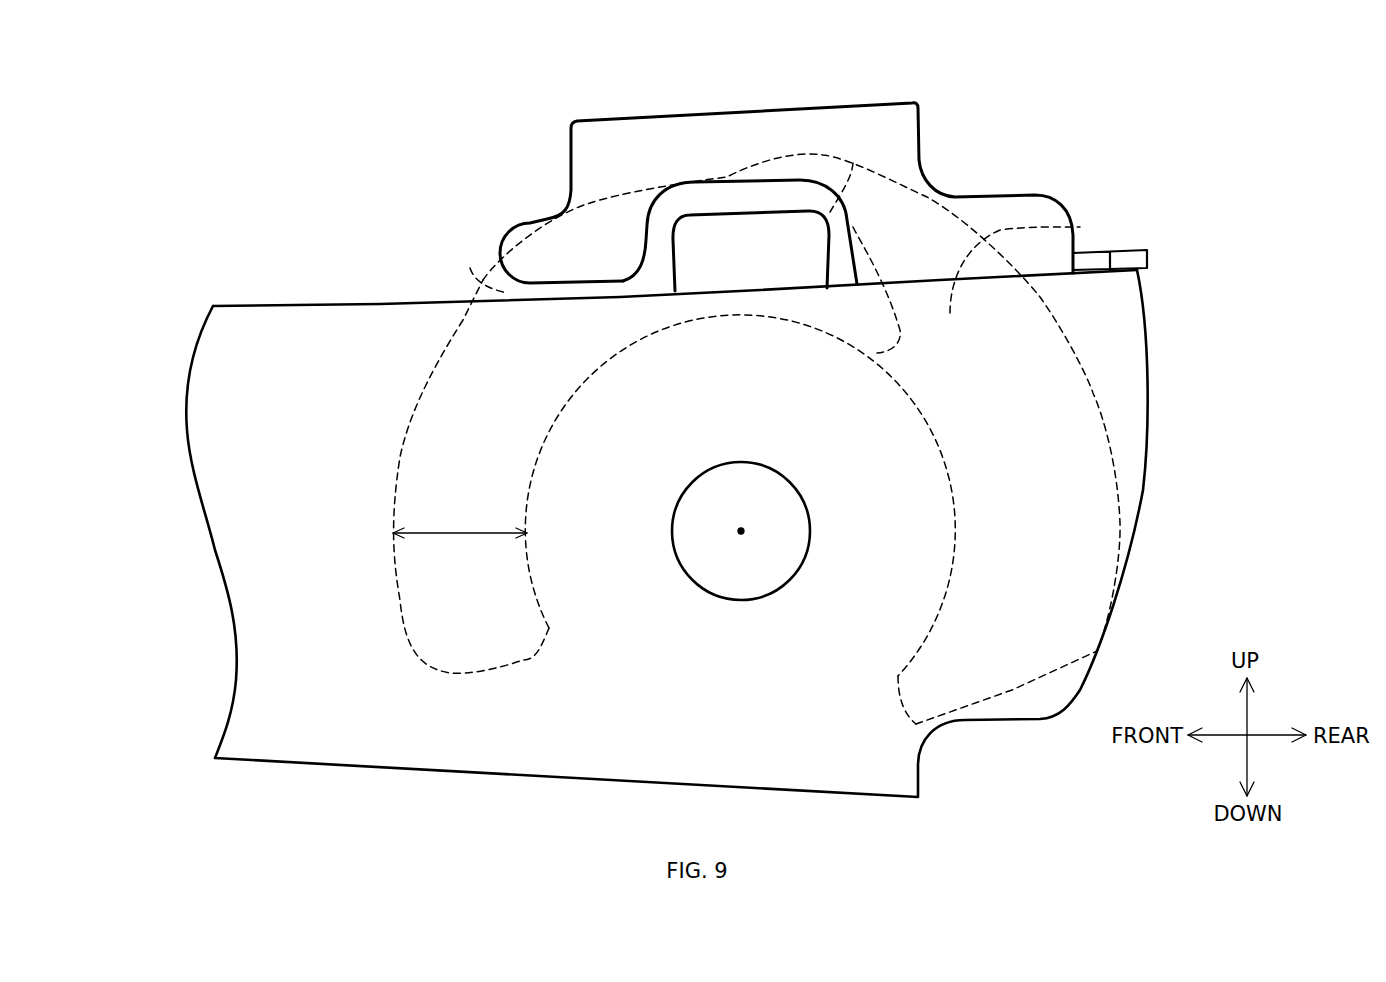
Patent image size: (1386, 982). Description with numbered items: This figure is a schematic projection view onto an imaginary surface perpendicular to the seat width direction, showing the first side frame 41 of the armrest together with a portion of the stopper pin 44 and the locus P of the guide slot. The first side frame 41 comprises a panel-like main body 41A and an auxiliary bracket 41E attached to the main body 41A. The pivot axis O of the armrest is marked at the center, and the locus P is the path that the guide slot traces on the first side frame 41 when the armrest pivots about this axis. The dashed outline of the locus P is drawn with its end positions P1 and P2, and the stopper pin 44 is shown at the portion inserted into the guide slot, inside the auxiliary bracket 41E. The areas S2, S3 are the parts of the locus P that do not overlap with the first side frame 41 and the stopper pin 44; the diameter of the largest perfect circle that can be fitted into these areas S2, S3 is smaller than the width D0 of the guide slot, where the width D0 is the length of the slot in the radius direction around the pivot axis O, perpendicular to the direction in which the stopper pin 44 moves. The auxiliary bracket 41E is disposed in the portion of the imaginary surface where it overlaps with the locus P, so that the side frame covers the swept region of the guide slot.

The first side frame 41 is at (162, 491).
The main body 41A is at (267, 335).
The auxiliary bracket 41E is at (890, 113).
The stopper pin 44 is at (733, 237).
The pivot axis O is at (741, 531).
The locus P is at (1080, 227).
The first position outline P1 is at (1077, 353).
The second position outline P2 is at (433, 373).
The area S2 is at (853, 163).
The area S3 is at (470, 268).
The width of the guide slot D0 is at (460, 521).